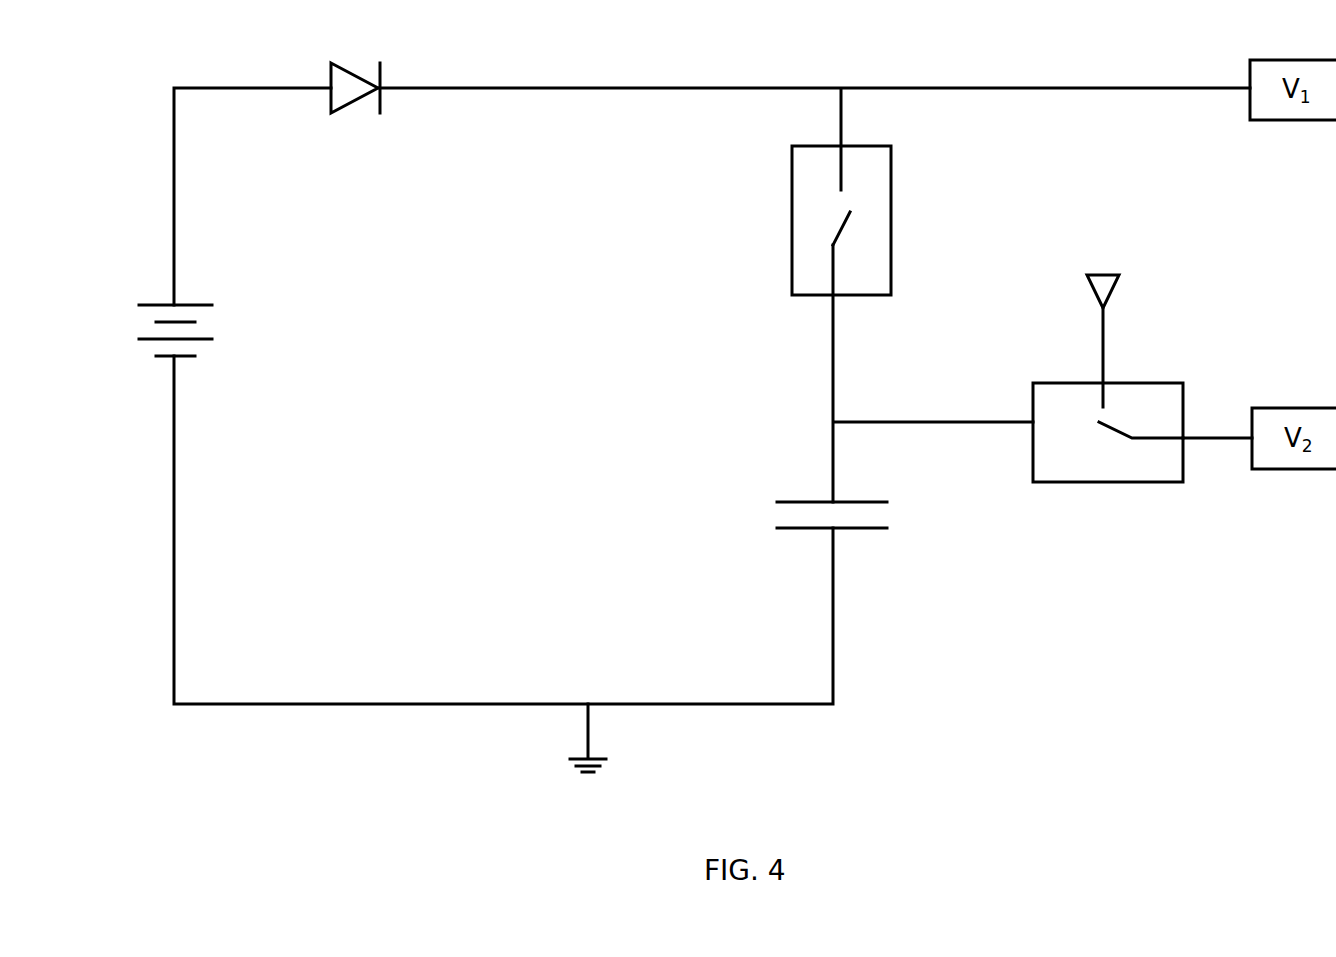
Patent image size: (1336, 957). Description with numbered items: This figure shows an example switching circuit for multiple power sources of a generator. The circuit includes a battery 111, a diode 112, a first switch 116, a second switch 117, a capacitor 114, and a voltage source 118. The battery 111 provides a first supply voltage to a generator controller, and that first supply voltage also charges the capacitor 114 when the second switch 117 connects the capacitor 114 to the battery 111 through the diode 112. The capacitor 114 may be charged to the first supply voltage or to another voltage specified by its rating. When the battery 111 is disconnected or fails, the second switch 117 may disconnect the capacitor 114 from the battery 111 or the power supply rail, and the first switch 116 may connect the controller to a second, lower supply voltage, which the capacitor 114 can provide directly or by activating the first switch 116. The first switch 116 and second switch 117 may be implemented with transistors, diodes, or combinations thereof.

The battery 111 is at (174, 305).
The diode 112 is at (312, 87).
The capacitor 114 is at (809, 500).
The first switch 116 is at (1033, 383).
The second switch 117 is at (791, 205).
The voltage source 118 is at (1088, 282).